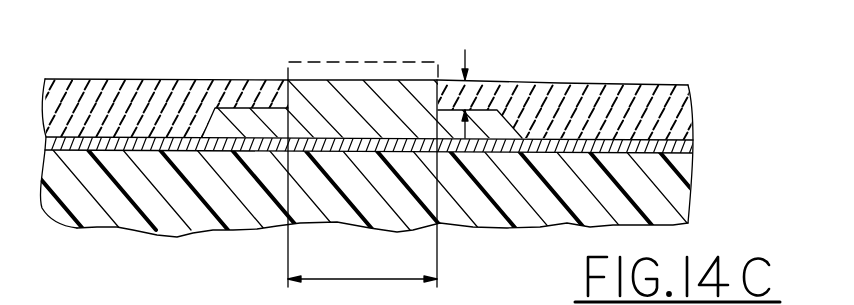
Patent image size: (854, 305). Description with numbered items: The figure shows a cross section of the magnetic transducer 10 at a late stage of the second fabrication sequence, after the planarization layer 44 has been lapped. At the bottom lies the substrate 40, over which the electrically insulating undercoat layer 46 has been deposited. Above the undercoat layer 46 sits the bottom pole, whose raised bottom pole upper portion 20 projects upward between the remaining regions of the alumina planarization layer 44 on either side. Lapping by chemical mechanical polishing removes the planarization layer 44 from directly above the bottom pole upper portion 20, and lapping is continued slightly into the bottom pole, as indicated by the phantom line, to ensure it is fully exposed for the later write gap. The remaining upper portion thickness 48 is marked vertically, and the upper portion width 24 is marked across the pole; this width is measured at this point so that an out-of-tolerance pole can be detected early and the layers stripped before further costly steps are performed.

The magnetic transducer 10 is at (605, 30).
The bottom pole upper portion 20 is at (340, 90).
The upper portion width 24 is at (362, 183).
The substrate 40 is at (688, 198).
The planarization layer 44 is at (688, 104).
The undercoat layer 46 is at (690, 150).
The upper portion thickness 48 is at (465, 62).